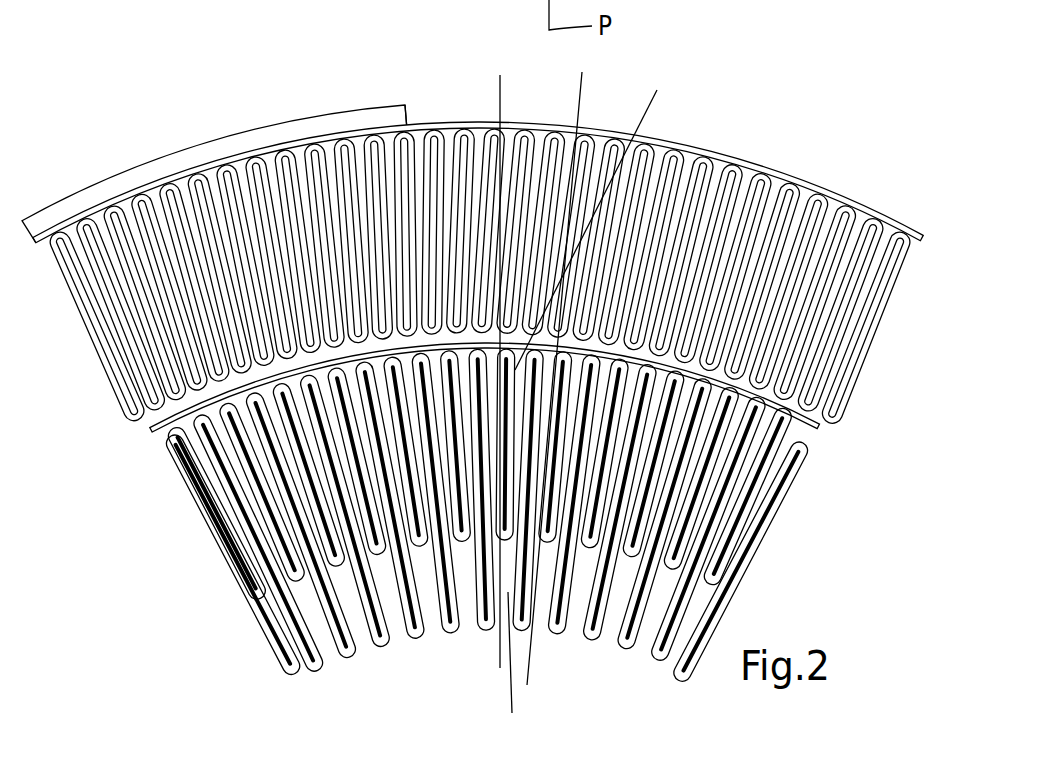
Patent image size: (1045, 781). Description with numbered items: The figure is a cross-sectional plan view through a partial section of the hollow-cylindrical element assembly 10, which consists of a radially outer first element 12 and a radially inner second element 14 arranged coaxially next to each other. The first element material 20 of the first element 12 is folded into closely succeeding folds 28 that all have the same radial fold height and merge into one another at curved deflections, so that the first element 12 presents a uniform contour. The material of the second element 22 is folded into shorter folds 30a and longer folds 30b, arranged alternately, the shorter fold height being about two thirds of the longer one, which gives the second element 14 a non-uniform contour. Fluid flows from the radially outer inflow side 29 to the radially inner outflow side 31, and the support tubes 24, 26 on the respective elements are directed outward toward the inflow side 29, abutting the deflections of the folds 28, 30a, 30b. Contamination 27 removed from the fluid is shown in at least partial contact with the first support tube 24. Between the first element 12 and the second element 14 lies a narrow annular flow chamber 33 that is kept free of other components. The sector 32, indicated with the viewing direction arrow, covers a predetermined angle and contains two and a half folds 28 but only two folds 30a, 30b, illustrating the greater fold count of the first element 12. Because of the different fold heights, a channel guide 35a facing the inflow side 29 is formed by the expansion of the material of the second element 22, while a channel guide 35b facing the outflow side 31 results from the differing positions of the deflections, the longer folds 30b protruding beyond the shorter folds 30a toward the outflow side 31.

The element assembly 10 is at (838, 158).
The first element 12 is at (865, 358).
The second element 14 is at (796, 497).
The first element material 20 is at (107, 362).
The material of the second element 22 is at (208, 527).
The first support tube 24 is at (728, 157).
The support tube 26 is at (820, 435).
The contamination 27 is at (100, 197).
The folds of the first element 28 is at (284, 150).
The inflow side 29 is at (372, 60).
The shorter folds of the second element 30a is at (345, 567).
The longer folds of the second element 30b is at (350, 653).
The outflow side 31 is at (487, 680).
The sector 32 is at (582, 90).
The flow chamber 33 is at (160, 418).
The channel guide facing the inflow side 35a is at (608, 221).
The channel guide facing the outflow side 35b is at (526, 669).